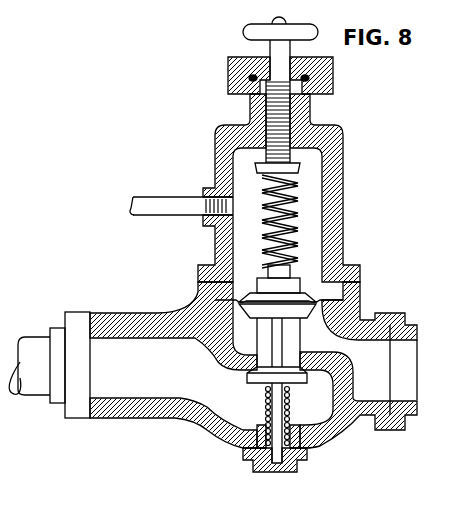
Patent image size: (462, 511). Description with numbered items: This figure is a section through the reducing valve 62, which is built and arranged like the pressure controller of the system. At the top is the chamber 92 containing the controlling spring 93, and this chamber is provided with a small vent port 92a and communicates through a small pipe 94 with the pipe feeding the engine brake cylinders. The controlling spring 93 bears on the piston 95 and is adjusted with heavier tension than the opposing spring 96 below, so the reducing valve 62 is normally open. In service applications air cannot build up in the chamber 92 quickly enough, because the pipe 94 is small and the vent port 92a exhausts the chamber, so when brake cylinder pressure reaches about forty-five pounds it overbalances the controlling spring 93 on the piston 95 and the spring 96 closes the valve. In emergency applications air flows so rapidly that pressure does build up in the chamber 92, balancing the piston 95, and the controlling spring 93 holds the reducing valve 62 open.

The reducing valve 62 is at (214, 299).
The chamber 92 is at (292, 221).
The vent port 92a is at (338, 152).
The controlling spring 93 is at (284, 207).
The pipe 94 is at (151, 201).
The piston 95 is at (303, 292).
The spring 96 is at (266, 411).